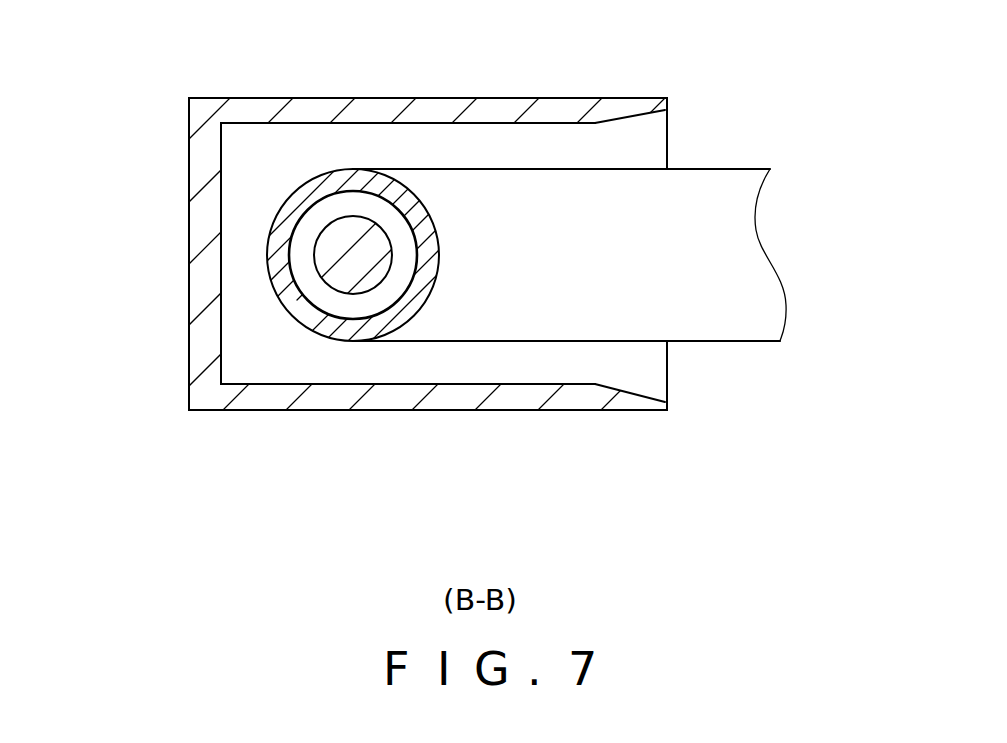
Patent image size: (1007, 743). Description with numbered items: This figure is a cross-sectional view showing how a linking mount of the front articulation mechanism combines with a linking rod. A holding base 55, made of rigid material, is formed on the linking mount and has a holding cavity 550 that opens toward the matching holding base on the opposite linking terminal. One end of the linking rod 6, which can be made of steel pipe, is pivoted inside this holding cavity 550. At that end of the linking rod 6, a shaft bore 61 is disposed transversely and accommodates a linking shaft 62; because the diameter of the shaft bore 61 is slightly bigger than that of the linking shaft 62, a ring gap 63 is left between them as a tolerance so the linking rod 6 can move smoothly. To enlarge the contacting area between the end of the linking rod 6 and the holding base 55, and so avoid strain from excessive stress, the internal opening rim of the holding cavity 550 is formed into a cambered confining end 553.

The holding base 55 is at (207, 217).
The holding cavity 550 is at (260, 328).
The cambered confining end 553 is at (630, 118).
The linking rod 6 is at (712, 248).
The shaft bore 61 is at (330, 325).
The linking shaft 62 is at (379, 232).
The ring gap 63 is at (302, 240).